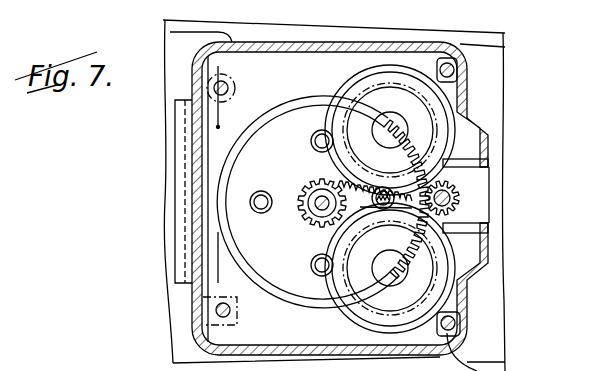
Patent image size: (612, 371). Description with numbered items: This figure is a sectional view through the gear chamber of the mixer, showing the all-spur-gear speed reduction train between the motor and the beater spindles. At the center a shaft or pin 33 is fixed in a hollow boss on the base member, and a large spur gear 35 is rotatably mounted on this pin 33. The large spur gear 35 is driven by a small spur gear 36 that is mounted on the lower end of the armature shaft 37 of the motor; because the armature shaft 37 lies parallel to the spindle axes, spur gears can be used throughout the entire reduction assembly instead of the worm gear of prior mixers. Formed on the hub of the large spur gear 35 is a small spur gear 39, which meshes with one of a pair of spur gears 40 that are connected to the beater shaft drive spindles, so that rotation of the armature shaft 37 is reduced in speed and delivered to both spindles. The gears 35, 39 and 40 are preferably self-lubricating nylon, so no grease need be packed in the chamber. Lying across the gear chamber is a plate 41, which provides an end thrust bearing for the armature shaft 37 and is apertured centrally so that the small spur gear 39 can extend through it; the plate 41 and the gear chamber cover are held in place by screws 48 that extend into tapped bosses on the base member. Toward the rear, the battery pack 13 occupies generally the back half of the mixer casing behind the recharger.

The battery pack 13 is at (185, 268).
The plate 41 is at (218, 128).
The screws 48 is at (230, 80).
The spur gears 40 is at (438, 119).
The large spur gear 35 is at (280, 302).
The small spur gear 39 is at (300, 243).
The shaft or pin 33 is at (322, 203).
The small spur gear 36 is at (458, 192).
The armature shaft 37 is at (475, 183).